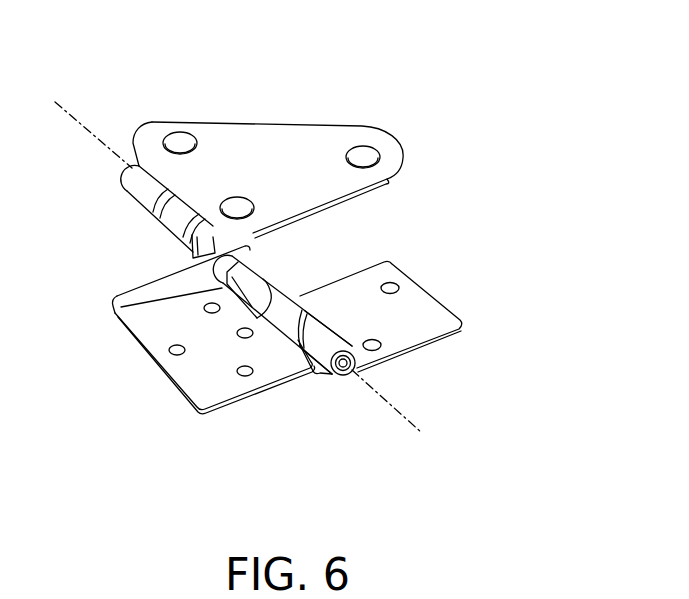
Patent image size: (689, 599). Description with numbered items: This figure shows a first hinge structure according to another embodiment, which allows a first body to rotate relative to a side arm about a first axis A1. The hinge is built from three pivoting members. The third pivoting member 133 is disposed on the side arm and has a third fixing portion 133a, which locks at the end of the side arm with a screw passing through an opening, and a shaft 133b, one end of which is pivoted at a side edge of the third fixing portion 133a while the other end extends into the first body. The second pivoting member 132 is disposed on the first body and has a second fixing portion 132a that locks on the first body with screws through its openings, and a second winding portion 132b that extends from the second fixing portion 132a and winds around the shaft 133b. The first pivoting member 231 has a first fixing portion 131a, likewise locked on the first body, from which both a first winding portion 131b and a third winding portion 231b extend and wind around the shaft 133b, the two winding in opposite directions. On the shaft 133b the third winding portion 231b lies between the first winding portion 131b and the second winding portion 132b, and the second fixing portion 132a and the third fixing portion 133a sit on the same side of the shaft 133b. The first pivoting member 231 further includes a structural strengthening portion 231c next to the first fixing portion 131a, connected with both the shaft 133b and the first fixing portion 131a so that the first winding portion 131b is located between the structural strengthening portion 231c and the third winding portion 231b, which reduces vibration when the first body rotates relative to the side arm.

The first axis A1 is at (60, 102).
The third pivoting member 133 is at (262, 129).
The third fixing portion 133a is at (238, 133).
The shaft 133b is at (168, 150).
The second pivoting member 132 is at (451, 320).
The second fixing portion 132a is at (418, 308).
The second winding portion 132b is at (328, 340).
The first pivoting member 231 is at (221, 382).
The structural strengthening portion 231c is at (134, 312).
The first fixing portion 131a is at (190, 378).
The first winding portion 131b is at (247, 283).
The third winding portion 231b is at (311, 392).